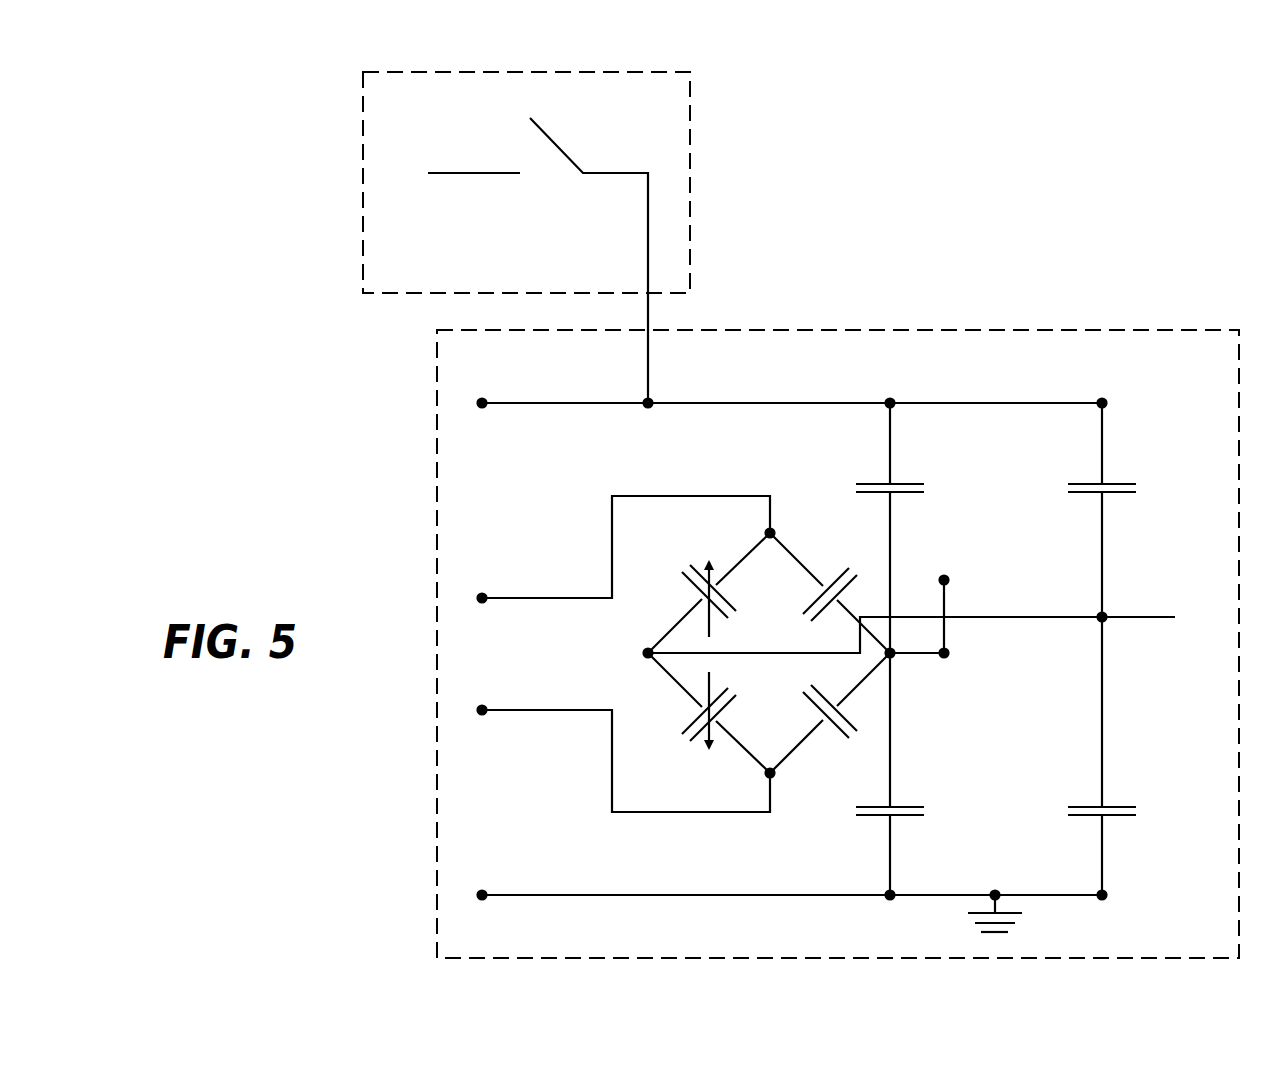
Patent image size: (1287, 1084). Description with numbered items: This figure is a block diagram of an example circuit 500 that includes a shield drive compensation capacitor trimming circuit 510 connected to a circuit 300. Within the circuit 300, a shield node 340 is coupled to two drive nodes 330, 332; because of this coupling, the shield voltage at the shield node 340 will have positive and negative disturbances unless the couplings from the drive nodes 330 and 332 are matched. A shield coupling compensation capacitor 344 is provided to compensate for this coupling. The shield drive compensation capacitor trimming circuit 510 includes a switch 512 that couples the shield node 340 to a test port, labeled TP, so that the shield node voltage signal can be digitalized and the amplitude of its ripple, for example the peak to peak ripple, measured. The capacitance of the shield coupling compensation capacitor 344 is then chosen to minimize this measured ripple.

The circuit 500 is at (322, 78).
The shield drive compensation capacitor trimming circuit 510 is at (690, 176).
The switch 512 is at (571, 162).
The circuit 300 is at (1159, 330).
The shield node 340 is at (1046, 380).
The shield coupling compensation capacitor 344 is at (904, 493).
The drive node 332 is at (950, 583).
The drive node 330 is at (1106, 622).